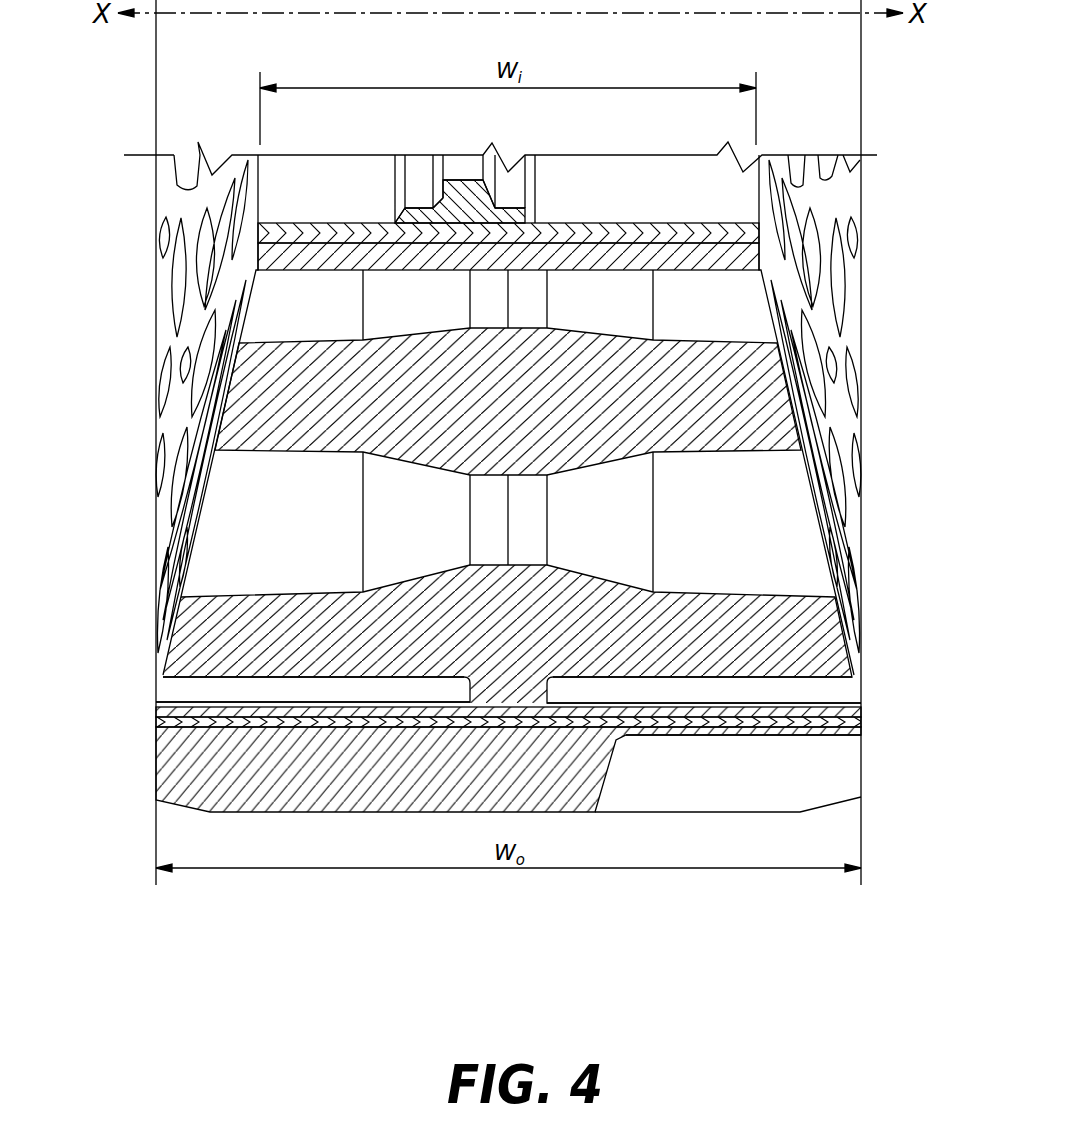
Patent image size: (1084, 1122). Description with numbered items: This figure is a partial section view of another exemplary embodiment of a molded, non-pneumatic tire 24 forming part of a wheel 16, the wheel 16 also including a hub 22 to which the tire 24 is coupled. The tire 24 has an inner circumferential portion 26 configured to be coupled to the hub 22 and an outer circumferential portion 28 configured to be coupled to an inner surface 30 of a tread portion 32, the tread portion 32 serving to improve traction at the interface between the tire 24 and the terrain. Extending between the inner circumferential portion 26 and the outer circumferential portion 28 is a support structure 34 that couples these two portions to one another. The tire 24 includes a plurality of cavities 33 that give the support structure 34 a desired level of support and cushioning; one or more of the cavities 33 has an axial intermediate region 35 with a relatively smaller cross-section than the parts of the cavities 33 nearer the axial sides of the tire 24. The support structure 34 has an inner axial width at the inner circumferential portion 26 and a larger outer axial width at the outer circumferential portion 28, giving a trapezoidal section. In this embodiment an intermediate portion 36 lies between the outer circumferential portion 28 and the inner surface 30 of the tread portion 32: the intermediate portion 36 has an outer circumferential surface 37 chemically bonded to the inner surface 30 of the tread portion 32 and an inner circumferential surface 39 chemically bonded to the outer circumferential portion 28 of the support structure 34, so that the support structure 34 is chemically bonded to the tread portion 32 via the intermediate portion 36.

The wheel 16 is at (884, 95).
The hub 22 is at (572, 232).
The tire 24 is at (886, 263).
The inner circumferential portion 26 is at (318, 258).
The outer circumferential portion 28 is at (273, 712).
The inner surface 30 is at (860, 713).
The tread portion 32 is at (822, 768).
The cavities 33 is at (272, 330).
The support structure 34 is at (848, 350).
The axial intermediate region 35 is at (388, 293).
The intermediate portion 36 is at (160, 722).
The outer circumferential surface 37 is at (230, 730).
The inner circumferential surface 39 is at (187, 713).